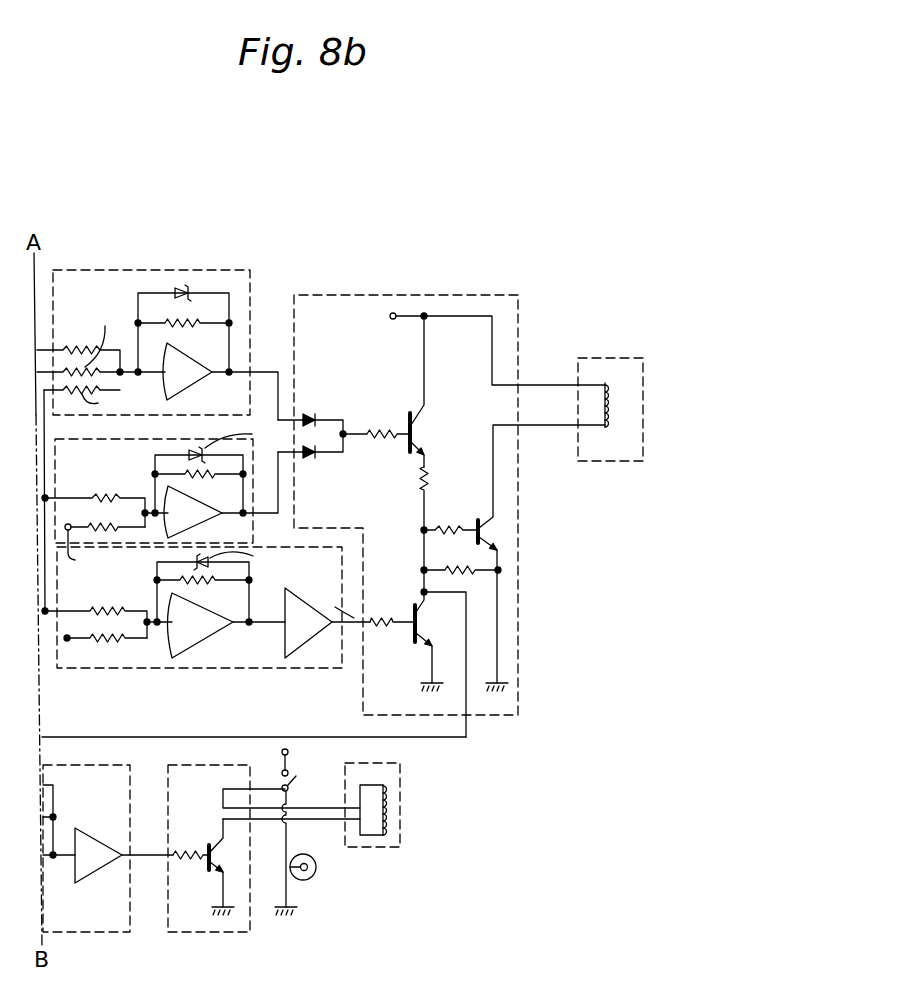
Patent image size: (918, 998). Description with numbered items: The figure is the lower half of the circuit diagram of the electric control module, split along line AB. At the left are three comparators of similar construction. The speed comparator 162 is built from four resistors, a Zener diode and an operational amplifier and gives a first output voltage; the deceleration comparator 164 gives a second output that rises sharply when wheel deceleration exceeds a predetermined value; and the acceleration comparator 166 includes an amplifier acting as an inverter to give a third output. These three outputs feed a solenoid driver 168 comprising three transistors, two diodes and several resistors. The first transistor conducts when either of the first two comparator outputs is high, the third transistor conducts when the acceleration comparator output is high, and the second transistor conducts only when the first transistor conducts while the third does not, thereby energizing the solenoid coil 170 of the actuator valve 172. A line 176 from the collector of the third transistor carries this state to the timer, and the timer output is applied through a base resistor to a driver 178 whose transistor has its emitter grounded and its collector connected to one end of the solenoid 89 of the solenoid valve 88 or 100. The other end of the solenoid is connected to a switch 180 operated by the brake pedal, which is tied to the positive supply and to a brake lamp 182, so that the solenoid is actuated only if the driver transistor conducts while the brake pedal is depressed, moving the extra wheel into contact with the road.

The speed comparator 162 is at (156, 243).
The deceleration comparator 164 is at (53, 480).
The acceleration comparator 166 is at (57, 617).
The solenoid driver 168 is at (417, 274).
The solenoid coil 170 is at (606, 428).
The actuator valve 172 is at (643, 337).
The line 176 is at (130, 737).
The driver 178 is at (193, 765).
The switch 180 is at (301, 766).
The brake lamp 182 is at (315, 878).
The solenoid valve 88 is at (436, 824).
The solenoid valve 100 is at (400, 783).
The solenoid 89 is at (373, 837).